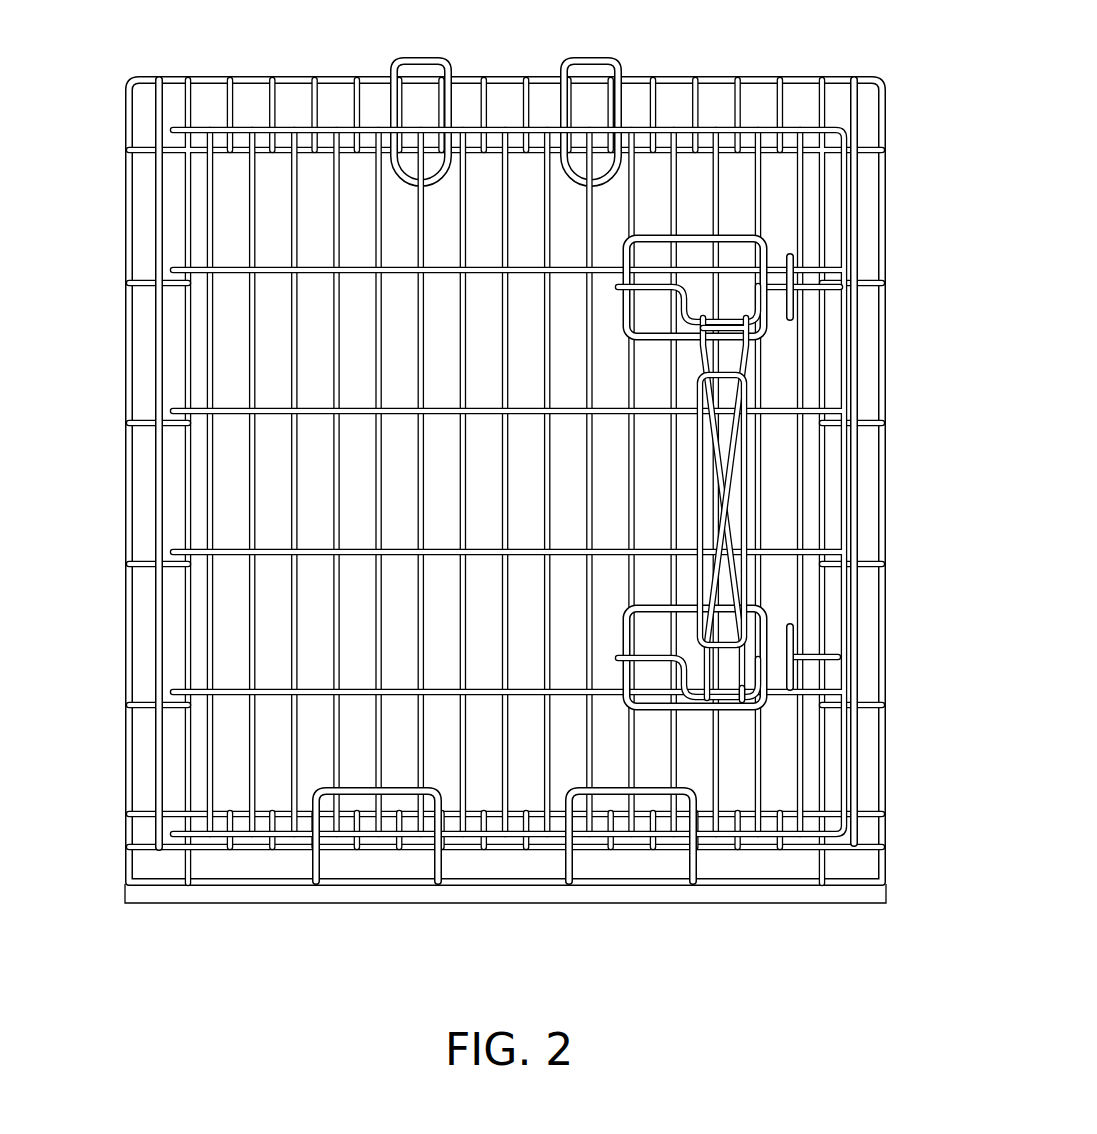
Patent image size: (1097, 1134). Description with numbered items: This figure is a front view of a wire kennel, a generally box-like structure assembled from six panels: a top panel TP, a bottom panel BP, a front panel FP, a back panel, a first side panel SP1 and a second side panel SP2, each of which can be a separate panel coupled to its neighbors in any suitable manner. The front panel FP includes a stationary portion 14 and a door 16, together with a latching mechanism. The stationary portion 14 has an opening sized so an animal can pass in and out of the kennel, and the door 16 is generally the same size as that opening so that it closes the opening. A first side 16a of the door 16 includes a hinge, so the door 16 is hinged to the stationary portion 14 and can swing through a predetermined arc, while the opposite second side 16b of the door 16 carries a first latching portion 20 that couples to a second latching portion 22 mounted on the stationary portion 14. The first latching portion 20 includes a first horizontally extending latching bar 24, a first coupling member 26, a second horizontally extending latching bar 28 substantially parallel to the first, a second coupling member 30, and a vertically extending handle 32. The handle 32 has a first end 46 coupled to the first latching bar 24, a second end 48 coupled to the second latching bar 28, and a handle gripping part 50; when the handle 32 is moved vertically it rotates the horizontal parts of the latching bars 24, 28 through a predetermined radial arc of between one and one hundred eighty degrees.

The stationary portion 14 is at (822, 80).
The door 16 is at (700, 128).
The first side of the door 16a is at (207, 337).
The second side of the door 16b is at (848, 190).
The first latching portion 20 is at (767, 559).
The second latching portion 22 is at (822, 322).
The first horizontally extending latching bar 24 is at (655, 285).
The first coupling member 26 is at (653, 342).
The second horizontally extending latching bar 28 is at (650, 660).
The second coupling member 30 is at (738, 712).
The vertically extending handle 32 is at (746, 532).
The first end of the handle 46 is at (747, 355).
The second end of the handle 48 is at (700, 712).
The handle gripping part 50 is at (700, 523).
The top panel TP is at (330, 80).
The bottom panel BP is at (365, 904).
The front panel FP is at (512, 437).
The first side panel SP1 is at (888, 777).
The second side panel SP2 is at (126, 760).